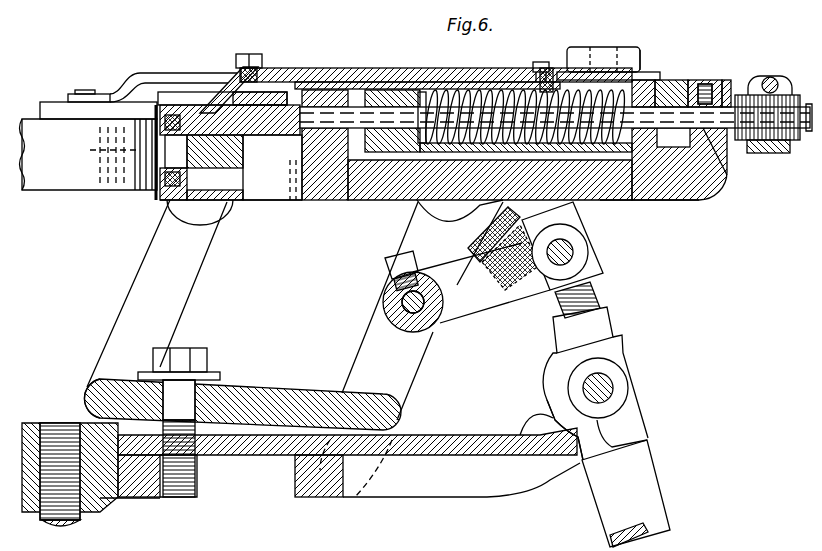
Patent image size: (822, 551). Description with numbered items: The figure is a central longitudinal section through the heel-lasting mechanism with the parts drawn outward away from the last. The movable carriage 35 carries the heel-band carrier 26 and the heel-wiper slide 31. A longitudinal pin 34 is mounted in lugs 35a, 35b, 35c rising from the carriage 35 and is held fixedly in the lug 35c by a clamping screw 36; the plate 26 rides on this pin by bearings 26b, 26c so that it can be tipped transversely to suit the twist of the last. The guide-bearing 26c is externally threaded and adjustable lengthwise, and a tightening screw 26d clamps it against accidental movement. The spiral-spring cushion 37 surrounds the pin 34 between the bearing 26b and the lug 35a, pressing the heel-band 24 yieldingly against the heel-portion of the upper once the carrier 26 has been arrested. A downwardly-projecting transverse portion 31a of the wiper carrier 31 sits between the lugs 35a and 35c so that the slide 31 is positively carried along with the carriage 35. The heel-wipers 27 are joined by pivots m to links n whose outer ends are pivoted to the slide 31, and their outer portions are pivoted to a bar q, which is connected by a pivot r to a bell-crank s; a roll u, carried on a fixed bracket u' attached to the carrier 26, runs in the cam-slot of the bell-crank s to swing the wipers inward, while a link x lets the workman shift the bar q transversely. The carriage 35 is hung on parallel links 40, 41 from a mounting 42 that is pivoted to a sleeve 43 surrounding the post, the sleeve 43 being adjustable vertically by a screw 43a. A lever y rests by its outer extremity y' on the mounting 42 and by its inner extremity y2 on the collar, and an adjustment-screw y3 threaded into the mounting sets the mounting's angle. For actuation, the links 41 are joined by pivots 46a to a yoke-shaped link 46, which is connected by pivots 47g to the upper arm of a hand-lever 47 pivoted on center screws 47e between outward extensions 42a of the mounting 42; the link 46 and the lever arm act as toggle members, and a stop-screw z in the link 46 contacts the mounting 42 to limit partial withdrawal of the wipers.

The heel-band 24 is at (163, 197).
The heel-wiper 27 is at (46, 102).
The pivot m is at (80, 93).
The link n is at (150, 74).
The link x is at (236, 58).
The bar q is at (352, 66).
The lug 35b is at (328, 86).
The heel-band carrier 26 is at (277, 140).
The bearing 26b is at (370, 88).
The heel-wiper slide 31 is at (425, 88).
The spiral-spring cushion 37 is at (486, 88).
The pivot r is at (526, 62).
The bell-crank s is at (552, 68).
The roll u is at (608, 50).
The bracket u' is at (657, 38).
The lug 35a is at (647, 77).
The downwardly-projecting transverse portion 31a is at (668, 78).
The clamping screw 36 is at (698, 80).
The lug 35c is at (740, 55).
The guide-bearing 26c is at (780, 97).
The tightening screw 26d is at (767, 70).
The longitudinal pin 34 is at (727, 175).
The carriage 35 is at (640, 200).
The parallel link 40 is at (127, 291).
The parallel link 41 is at (370, 342).
The lever y is at (242, 388).
The inner extremity of lever y2 is at (80, 385).
The adjustment-screw y3 is at (190, 347).
The outer extremity of lever y' is at (358, 429).
The mounting 42 is at (433, 435).
The outward extension 42a is at (550, 417).
The sleeve 43 is at (29, 421).
The screw 43a is at (80, 520).
The pivot 46a is at (385, 305).
The link 46 is at (472, 305).
The stop-screw z is at (522, 272).
The pivot 47g is at (578, 260).
The hand-lever 47 is at (647, 483).
The center screw 47e is at (617, 388).